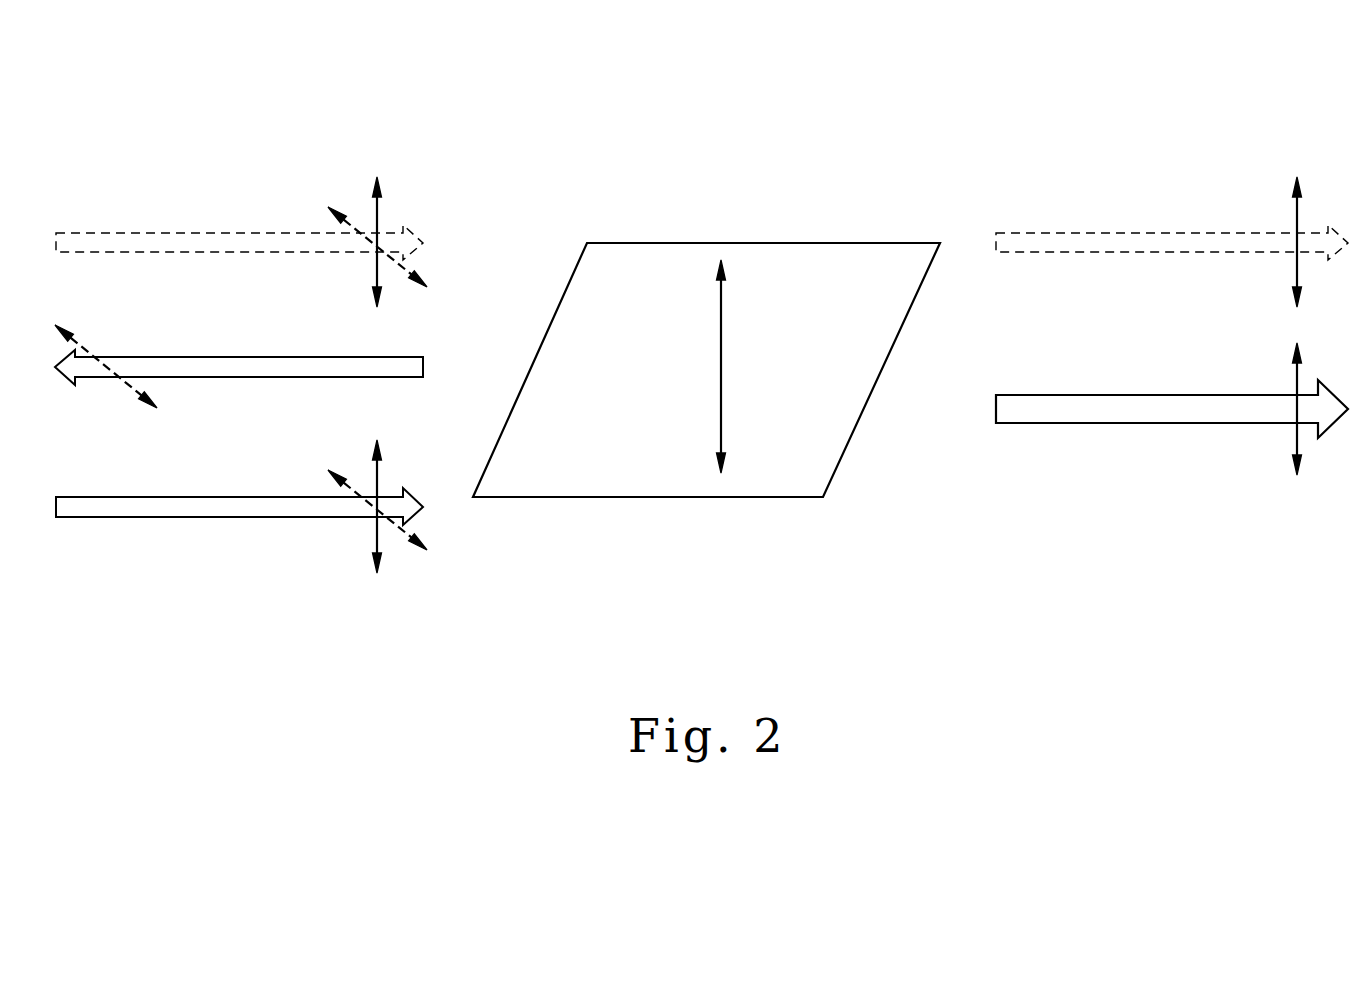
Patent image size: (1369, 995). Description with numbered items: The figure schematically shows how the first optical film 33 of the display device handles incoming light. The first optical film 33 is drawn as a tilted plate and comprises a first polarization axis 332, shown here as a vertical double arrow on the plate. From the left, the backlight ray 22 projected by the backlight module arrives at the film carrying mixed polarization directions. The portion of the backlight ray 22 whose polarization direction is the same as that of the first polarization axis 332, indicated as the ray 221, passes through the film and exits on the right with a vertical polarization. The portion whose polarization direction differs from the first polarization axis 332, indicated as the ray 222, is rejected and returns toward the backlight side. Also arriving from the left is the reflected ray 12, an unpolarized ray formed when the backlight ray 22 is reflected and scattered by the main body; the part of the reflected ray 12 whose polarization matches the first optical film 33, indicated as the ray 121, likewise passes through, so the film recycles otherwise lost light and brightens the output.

The reflected ray 12 is at (212, 232).
The reflected ray with polarization direction the same as the first polarization axi 121 is at (1113, 232).
The backlight ray 22 is at (165, 518).
The backlight ray with polarization direction the same as the first polarization axi 221 is at (1103, 424).
The backlight ray with polarization direction different from the first polarization 222 is at (248, 378).
The first optical film 33 is at (792, 242).
The first polarization axis 332 is at (720, 424).